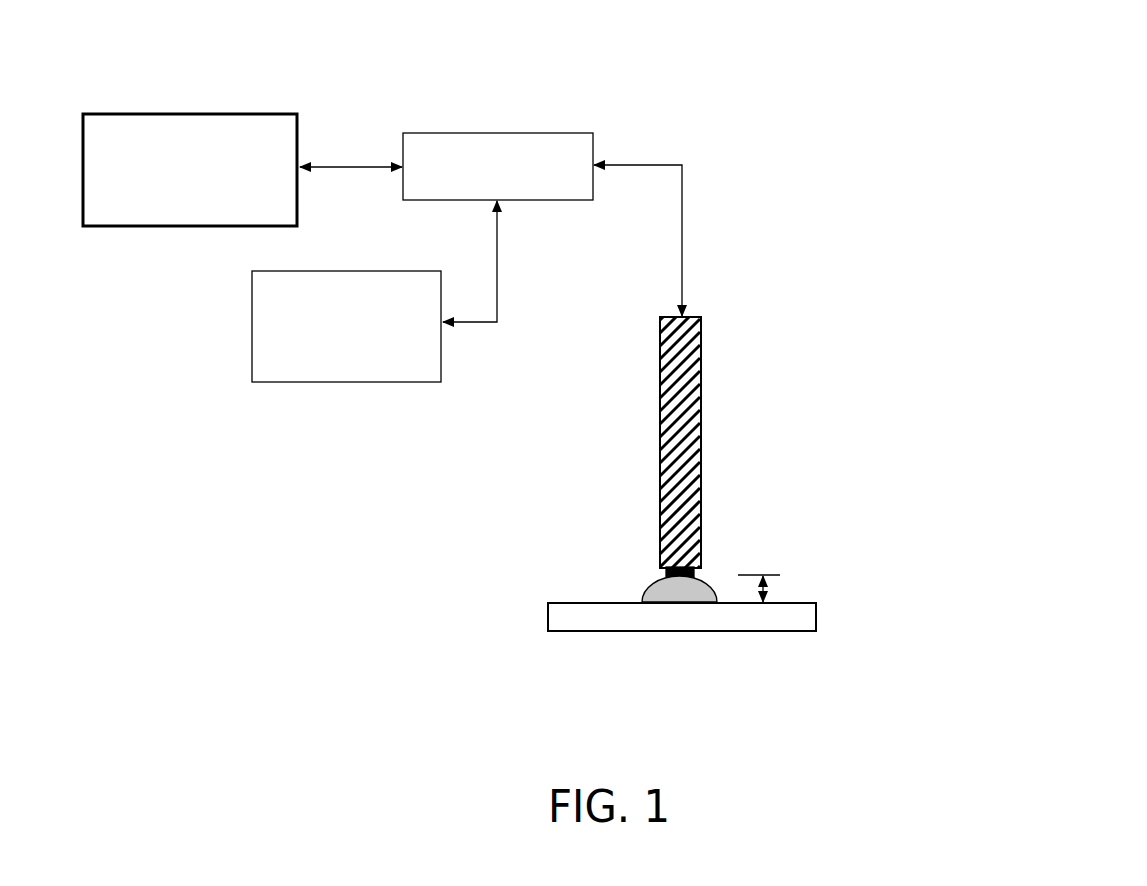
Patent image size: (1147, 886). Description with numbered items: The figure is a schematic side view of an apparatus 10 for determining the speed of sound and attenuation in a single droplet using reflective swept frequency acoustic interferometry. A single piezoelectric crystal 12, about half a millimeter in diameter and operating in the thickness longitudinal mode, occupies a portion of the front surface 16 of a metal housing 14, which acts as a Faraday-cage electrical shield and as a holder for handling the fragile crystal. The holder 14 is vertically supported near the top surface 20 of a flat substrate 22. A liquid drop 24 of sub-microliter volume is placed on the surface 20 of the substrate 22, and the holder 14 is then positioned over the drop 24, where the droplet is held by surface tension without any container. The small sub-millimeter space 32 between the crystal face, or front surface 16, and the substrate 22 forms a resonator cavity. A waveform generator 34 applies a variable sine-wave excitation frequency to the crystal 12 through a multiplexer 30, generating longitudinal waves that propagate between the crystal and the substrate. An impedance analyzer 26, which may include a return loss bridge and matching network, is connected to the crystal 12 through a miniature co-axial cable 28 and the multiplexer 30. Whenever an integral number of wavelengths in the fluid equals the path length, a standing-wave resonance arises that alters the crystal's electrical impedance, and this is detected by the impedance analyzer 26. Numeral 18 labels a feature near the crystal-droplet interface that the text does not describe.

The apparatus 10 is at (780, 258).
The piezoelectric crystal 12 is at (698, 569).
The metal housing 14 is at (706, 428).
The front surface 16 is at (646, 590).
The crystal-droplet contact interface 18 is at (660, 572).
The top surface 20 is at (563, 603).
The flat substrate 22 is at (820, 620).
The liquid drop 24 is at (551, 554).
The impedance analyzer 26 is at (186, 228).
The miniature co-axial cable 28 is at (688, 192).
The multiplexer 30 is at (530, 131).
The space 32 is at (768, 588).
The waveform generator 34 is at (337, 384).